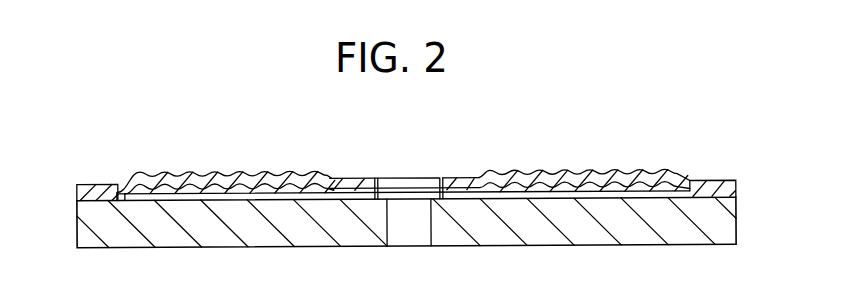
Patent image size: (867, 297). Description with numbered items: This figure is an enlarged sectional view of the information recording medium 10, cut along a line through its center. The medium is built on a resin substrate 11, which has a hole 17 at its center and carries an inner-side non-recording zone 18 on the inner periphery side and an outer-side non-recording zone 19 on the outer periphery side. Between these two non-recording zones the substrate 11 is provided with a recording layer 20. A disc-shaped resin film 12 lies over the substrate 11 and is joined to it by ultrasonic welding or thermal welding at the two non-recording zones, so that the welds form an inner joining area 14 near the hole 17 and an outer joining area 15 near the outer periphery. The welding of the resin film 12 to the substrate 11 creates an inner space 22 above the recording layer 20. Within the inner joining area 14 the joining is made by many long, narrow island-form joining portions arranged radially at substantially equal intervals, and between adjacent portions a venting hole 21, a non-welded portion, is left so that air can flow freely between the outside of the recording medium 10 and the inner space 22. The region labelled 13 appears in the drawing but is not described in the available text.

The information recording medium 10 is at (178, 154).
The resin substrate 11 is at (172, 236).
The resin film 12 is at (257, 189).
The flat central portion 13 is at (415, 186).
The inner joining area 14 is at (369, 197).
The outer joining area 15 is at (91, 194).
The hole 17 is at (410, 237).
The inner-side non-recording zone 18 is at (348, 192).
The outer-side non-recording zone 19 is at (117, 196).
The recording layer 20 is at (243, 196).
The venting hole 21 is at (442, 192).
The inner space 22 is at (517, 186).